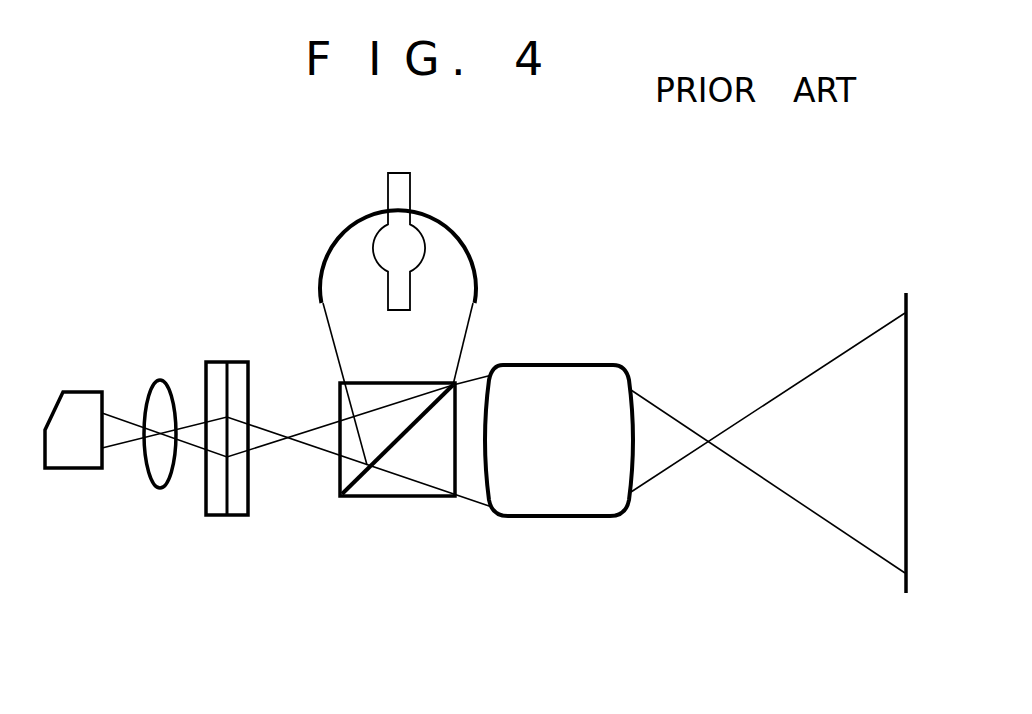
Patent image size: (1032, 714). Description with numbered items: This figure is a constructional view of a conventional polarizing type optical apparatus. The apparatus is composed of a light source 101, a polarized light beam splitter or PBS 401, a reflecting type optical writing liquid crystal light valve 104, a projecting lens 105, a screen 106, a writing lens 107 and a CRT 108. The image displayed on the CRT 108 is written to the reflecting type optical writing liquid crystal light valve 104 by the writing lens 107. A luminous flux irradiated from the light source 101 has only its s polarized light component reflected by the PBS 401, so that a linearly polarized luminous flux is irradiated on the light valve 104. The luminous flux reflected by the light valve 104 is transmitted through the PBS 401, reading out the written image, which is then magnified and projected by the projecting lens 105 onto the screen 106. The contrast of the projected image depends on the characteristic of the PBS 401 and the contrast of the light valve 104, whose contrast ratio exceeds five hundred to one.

The light source 101 is at (468, 266).
The reflecting type optical writing liquid crystal light valve 104 is at (227, 516).
The projecting lens 105 is at (552, 517).
The screen 106 is at (904, 591).
The writing lens 107 is at (161, 490).
The CRT 108 is at (83, 392).
The polarized light beam splitter (PBS) 401 is at (395, 497).